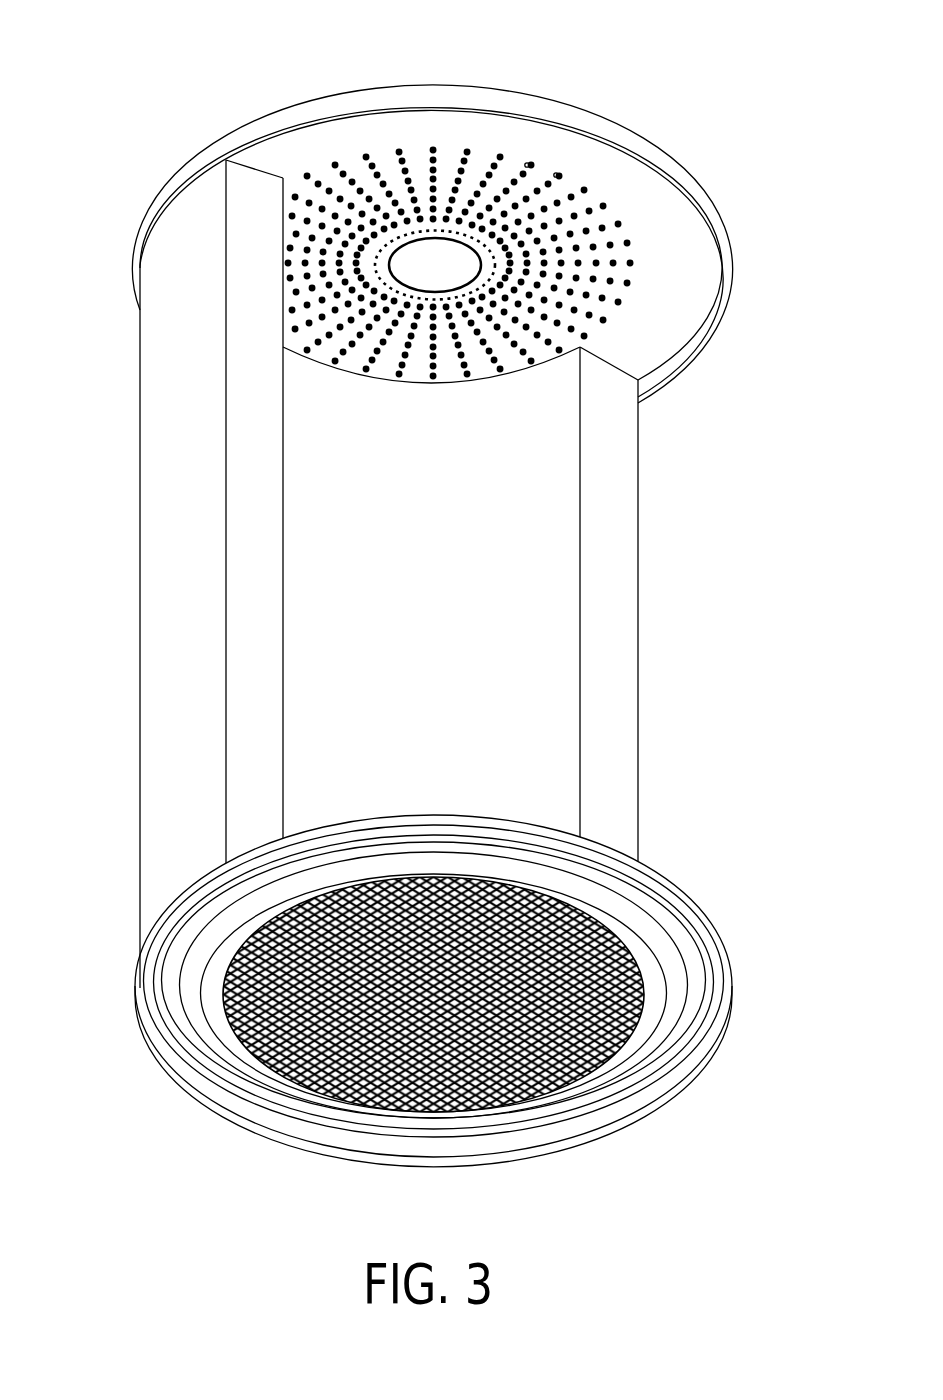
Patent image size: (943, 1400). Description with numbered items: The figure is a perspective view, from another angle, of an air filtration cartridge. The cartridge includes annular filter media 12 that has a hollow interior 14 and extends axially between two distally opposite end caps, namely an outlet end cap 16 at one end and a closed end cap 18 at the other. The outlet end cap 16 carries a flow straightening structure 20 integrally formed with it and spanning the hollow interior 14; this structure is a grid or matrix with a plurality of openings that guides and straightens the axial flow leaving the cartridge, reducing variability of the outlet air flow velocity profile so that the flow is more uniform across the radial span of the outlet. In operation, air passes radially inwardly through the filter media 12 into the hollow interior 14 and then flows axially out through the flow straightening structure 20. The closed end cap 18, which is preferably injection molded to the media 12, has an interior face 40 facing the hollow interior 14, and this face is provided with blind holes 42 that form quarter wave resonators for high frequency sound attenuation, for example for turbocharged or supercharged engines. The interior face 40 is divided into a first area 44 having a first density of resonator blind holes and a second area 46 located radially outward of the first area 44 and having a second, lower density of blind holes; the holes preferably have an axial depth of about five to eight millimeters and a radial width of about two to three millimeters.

The annular filter media 12 is at (184, 540).
The hollow interior 14 is at (422, 609).
The outlet end cap 16 is at (713, 927).
The closed end cap 18 is at (717, 215).
The flow straightening structure 20 is at (553, 1033).
The interior face 40 is at (505, 192).
The blind holes 42 is at (557, 173).
The first area 44 is at (444, 195).
The second area 46 is at (413, 142).